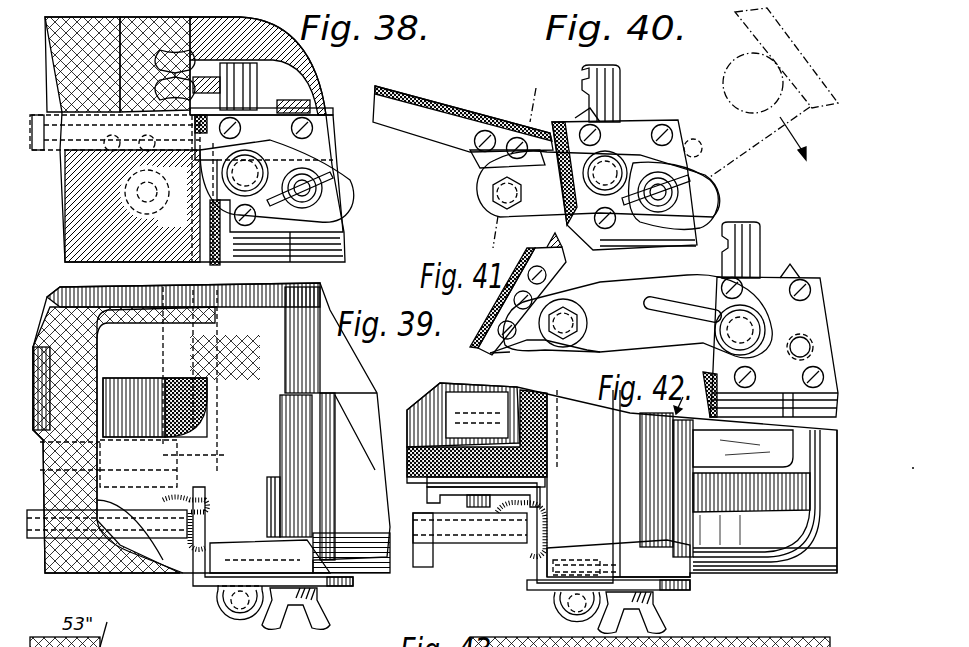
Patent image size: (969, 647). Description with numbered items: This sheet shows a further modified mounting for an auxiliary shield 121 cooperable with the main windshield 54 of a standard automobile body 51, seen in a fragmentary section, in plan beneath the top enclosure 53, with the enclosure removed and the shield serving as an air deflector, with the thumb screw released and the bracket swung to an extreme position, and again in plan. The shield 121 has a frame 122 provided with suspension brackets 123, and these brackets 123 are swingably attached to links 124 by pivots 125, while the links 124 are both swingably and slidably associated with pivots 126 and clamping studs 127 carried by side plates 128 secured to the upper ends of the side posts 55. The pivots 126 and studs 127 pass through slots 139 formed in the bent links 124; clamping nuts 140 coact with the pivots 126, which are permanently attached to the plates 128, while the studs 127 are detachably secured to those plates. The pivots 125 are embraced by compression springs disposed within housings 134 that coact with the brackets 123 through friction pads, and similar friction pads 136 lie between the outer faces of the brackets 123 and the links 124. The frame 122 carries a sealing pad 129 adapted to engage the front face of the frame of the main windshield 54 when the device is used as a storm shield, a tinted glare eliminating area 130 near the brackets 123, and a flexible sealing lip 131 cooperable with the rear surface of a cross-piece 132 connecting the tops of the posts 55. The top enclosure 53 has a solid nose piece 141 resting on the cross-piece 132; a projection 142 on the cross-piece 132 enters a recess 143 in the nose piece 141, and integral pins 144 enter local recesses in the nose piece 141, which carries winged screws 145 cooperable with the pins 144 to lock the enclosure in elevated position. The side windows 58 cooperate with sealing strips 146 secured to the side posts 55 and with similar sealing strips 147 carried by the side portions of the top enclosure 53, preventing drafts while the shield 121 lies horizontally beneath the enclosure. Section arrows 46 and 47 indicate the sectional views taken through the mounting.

In FIG. 39, the auxiliary shield 121 is at (73, 290).
In FIG. 42, the auxiliary shield 121 is at (490, 394).
In FIG. 40, the frame 122 is at (371, 133).
In FIG. 41, the frame 122 is at (483, 345).
In FIG. 40, the suspension brackets 123 is at (492, 158).
In FIG. 41, the suspension brackets 123 is at (528, 346).
In FIG. 39, the suspension brackets 123 is at (150, 470).
In FIG. 42, the suspension brackets 123 is at (484, 484).
In FIG. 38, the links 124 is at (340, 185).
In FIG. 40, the links 124 is at (704, 183).
In FIG. 41, the links 124 is at (607, 260).
In FIG. 39, the links 124 is at (353, 582).
In FIG. 42, the links 124 is at (692, 587).
In FIG. 38, the pivots 125 is at (148, 200).
In FIG. 40, the pivots 125 is at (498, 196).
In FIG. 41, the pivots 125 is at (568, 335).
In FIG. 39, the pivots 125 is at (135, 525).
In FIG. 42, the pivots 125 is at (467, 498).
In FIG. 38, the pivots 126 is at (265, 175).
In FIG. 40, the pivots 126 is at (608, 175).
In FIG. 41, the pivots 126 is at (732, 335).
In FIG. 39, the pivots 126 is at (238, 556).
In FIG. 42, the pivots 126 is at (590, 565).
In FIG. 38, the clamping studs 127 is at (318, 185).
In FIG. 40, the clamping studs 127 is at (695, 197).
In FIG. 39, the clamping studs 127 is at (327, 618).
In FIG. 42, the clamping studs 127 is at (668, 616).
In FIG. 38, the side plates 128 is at (315, 128).
In FIG. 40, the side plates 128 is at (678, 124).
In FIG. 41, the side plates 128 is at (822, 271).
In FIG. 39, the side plates 128 is at (325, 535).
In FIG. 42, the side plates 128 is at (607, 560).
In FIG. 40, the sealing pad 129 is at (404, 89).
In FIG. 41, the sealing pad 129 is at (470, 351).
In FIG. 42, the sealing pad 129 is at (527, 450).
In FIG. 39, the tinted glare eliminating area 130 is at (157, 400).
In FIG. 42, the tinted glare eliminating area 130 is at (443, 395).
In FIG. 40, the flexible sealing lip 131 is at (556, 124).
In FIG. 41, the flexible sealing lip 131 is at (710, 394).
In FIG. 39, the flexible sealing lip 131 is at (218, 432).
In FIG. 42, the flexible sealing lip 131 is at (557, 418).
In FIG. 39, the cross-piece 132 is at (303, 417).
In FIG. 42, the cross-piece 132 is at (650, 497).
In FIG. 39, the housings 134 is at (212, 461).
In FIG. 42, the friction pads 136 is at (485, 465).
In FIG. 38, the slots 139 is at (335, 210).
In FIG. 40, the slots 139 is at (697, 205).
In FIG. 41, the slots 139 is at (655, 298).
In FIG. 39, the clamping nuts 140 is at (222, 612).
In FIG. 42, the clamping nuts 140 is at (553, 612).
In FIG. 38, the nose piece 141 is at (293, 68).
In FIG. 39, the nose piece 141 is at (308, 293).
In FIG. 38, the projection 142 is at (305, 110).
In FIG. 40, the projection 142 is at (651, 116).
In FIG. 41, the projection 142 is at (783, 268).
In FIG. 39, the projection 142 is at (280, 490).
In FIG. 42, the projection 142 is at (628, 441).
In FIG. 38, the recess 143 is at (310, 103).
In FIG. 38, the pins 144 is at (243, 75).
In FIG. 40, the pins 144 is at (603, 82).
In FIG. 41, the pins 144 is at (744, 242).
In FIG. 38, the winged screws 145 is at (170, 75).
In FIG. 38, the sealing strips 146 is at (210, 262).
In FIG. 39, the sealing strips 146 is at (207, 508).
In FIG. 42, the sealing strips 146 is at (523, 550).
In FIG. 38, the sealing strips 147 is at (35, 152).
In FIG. 38, the section line 46 is at (97, 160).
In FIG. 40, the section line 47 is at (530, 107).
In FIG. 42, the body 51 is at (815, 573).
In FIG. 38, the top enclosure 53 is at (63, 68).
In FIG. 39, the top enclosure 53 is at (120, 335).
In FIG. 39, the main windshield 54 is at (350, 371).
In FIG. 42, the main windshield 54 is at (753, 452).
In FIG. 38, the side posts 55 is at (320, 250).
In FIG. 41, the side posts 55 is at (790, 385).
In FIG. 39, the side posts 55 is at (370, 472).
In FIG. 42, the side posts 55 is at (765, 542).
In FIG. 38, the side windows 58 is at (127, 222).
In FIG. 39, the side windows 58 is at (140, 523).
In FIG. 42, the side windows 58 is at (442, 555).